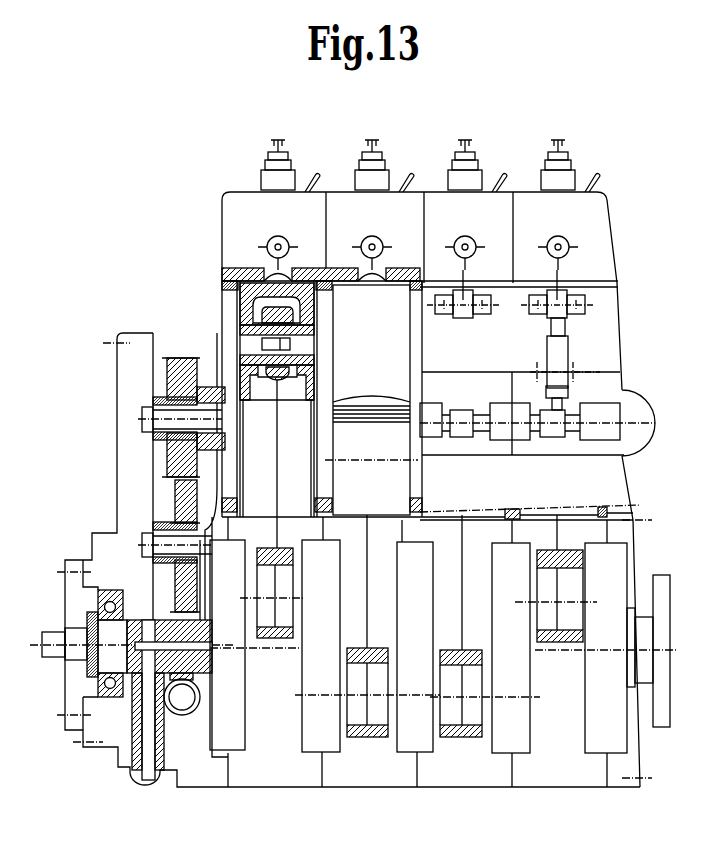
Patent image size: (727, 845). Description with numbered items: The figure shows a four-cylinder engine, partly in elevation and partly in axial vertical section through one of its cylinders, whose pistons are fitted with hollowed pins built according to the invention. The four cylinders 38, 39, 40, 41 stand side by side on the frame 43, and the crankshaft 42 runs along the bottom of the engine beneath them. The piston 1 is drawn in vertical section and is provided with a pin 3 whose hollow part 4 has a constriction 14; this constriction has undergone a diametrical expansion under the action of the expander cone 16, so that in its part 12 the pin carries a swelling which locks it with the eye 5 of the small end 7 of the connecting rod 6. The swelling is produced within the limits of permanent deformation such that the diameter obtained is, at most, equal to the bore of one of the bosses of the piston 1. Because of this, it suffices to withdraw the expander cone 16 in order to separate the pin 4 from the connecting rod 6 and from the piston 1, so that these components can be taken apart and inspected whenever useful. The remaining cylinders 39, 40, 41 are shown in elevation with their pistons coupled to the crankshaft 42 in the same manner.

The piston 1 is at (318, 272).
The pin 3 is at (240, 320).
The hollow part 4 is at (307, 343).
The eye 5 is at (263, 278).
The connecting rod 6 is at (263, 385).
The small end 7 is at (277, 475).
The part of the pin 12 is at (297, 313).
The constriction 14 is at (283, 390).
The expander cone 16 is at (305, 349).
The cylinder 38 is at (243, 472).
The cylinder 39 is at (387, 342).
The cylinder 40 is at (497, 512).
The cylinder 41 is at (598, 512).
The crankshaft 42 is at (167, 633).
The frame 43 is at (220, 313).